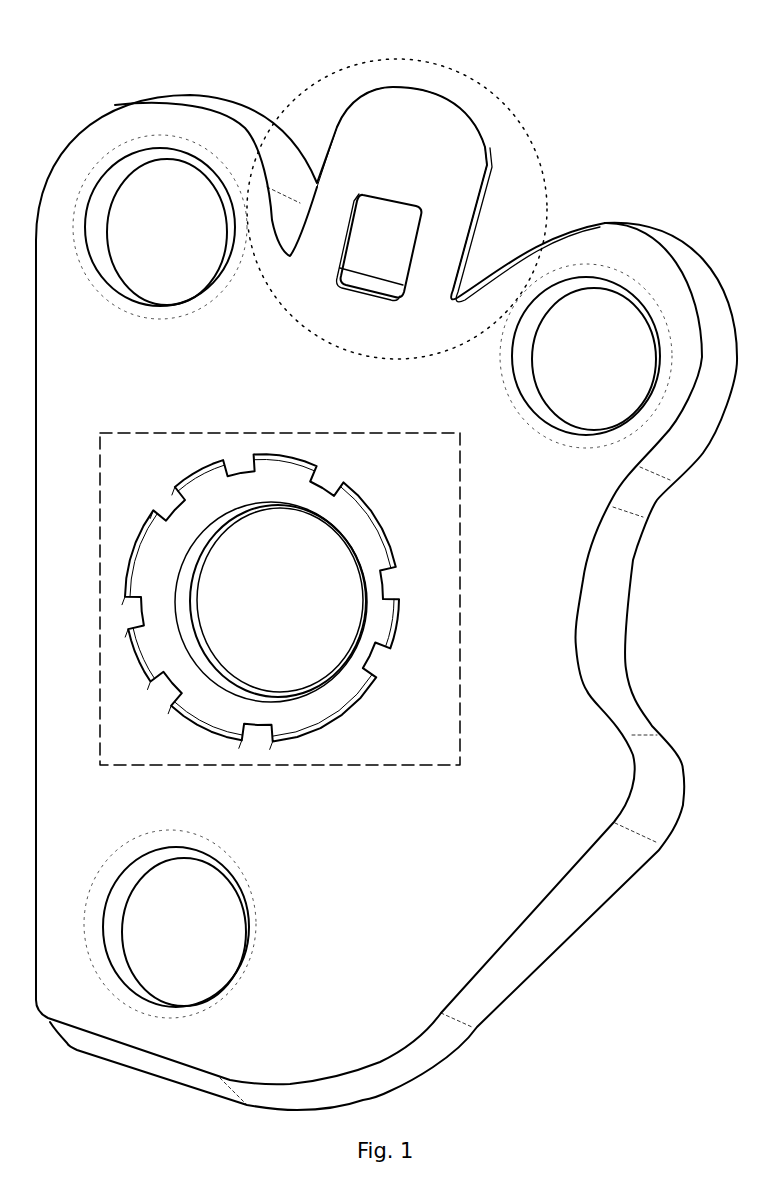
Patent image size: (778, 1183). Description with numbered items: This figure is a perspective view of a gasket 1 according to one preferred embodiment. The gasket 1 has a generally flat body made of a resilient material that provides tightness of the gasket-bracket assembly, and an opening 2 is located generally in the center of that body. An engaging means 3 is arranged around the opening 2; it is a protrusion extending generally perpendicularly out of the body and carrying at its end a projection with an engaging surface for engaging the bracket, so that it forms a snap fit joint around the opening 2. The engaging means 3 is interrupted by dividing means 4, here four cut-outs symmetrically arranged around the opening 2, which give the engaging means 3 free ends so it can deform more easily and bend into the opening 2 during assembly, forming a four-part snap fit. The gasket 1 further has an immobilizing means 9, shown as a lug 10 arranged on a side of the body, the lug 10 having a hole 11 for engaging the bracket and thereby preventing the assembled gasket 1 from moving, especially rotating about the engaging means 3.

The gasket 1 is at (562, 565).
The opening 2 is at (295, 570).
The engaging means 3 is at (313, 700).
The dividing means 4 is at (368, 632).
The immobilizing means 9 is at (527, 125).
The lug 10 is at (443, 115).
The hole 11 is at (393, 237).